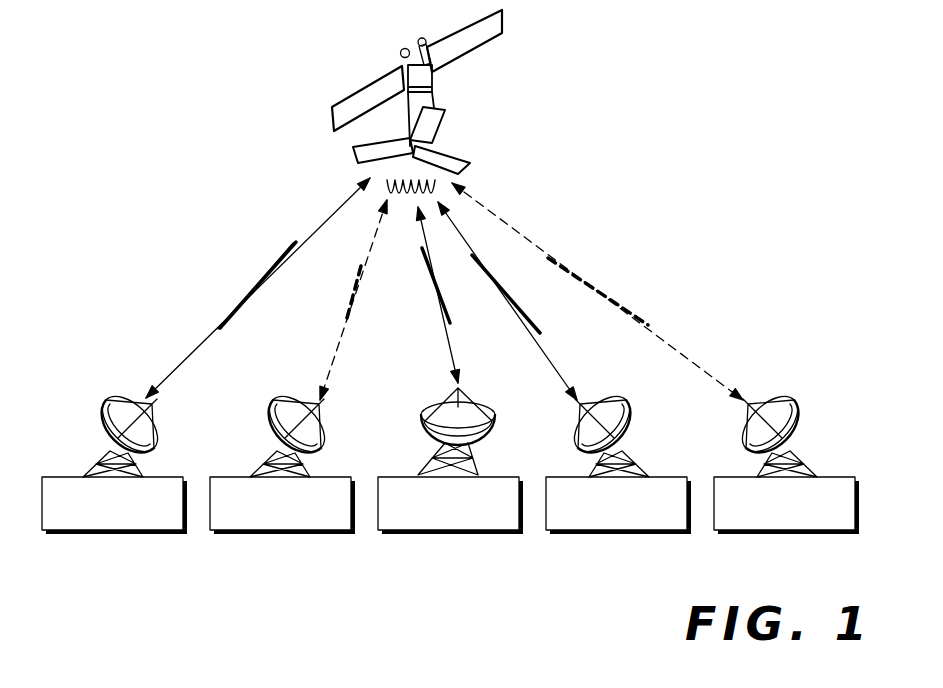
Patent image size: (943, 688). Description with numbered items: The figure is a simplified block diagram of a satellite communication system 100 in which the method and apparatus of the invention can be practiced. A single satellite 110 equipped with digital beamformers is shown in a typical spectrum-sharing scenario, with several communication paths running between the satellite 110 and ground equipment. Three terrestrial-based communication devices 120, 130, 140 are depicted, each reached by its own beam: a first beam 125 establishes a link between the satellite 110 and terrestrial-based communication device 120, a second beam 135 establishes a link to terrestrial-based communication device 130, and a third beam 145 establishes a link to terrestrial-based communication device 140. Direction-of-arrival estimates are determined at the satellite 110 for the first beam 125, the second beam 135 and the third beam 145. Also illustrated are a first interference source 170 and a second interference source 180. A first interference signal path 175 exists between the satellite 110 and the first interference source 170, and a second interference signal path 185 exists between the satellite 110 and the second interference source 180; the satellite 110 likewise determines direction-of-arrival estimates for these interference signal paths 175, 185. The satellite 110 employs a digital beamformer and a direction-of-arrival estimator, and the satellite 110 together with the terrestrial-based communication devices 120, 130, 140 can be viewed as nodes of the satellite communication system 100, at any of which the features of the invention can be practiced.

The satellite communication system 100 is at (651, 607).
The satellite 110 is at (337, 104).
The terrestrial-based communication device 120 is at (433, 534).
The first beam 125 is at (440, 317).
The terrestrial-based communication device 130 is at (600, 537).
The second beam 135 is at (533, 342).
The terrestrial-based communication device 140 is at (95, 537).
The third beam 145 is at (238, 303).
The first interference source 170 is at (263, 537).
The first interference signal path 175 is at (343, 332).
The second interference source 180 is at (768, 537).
The second interference signal path 185 is at (600, 290).